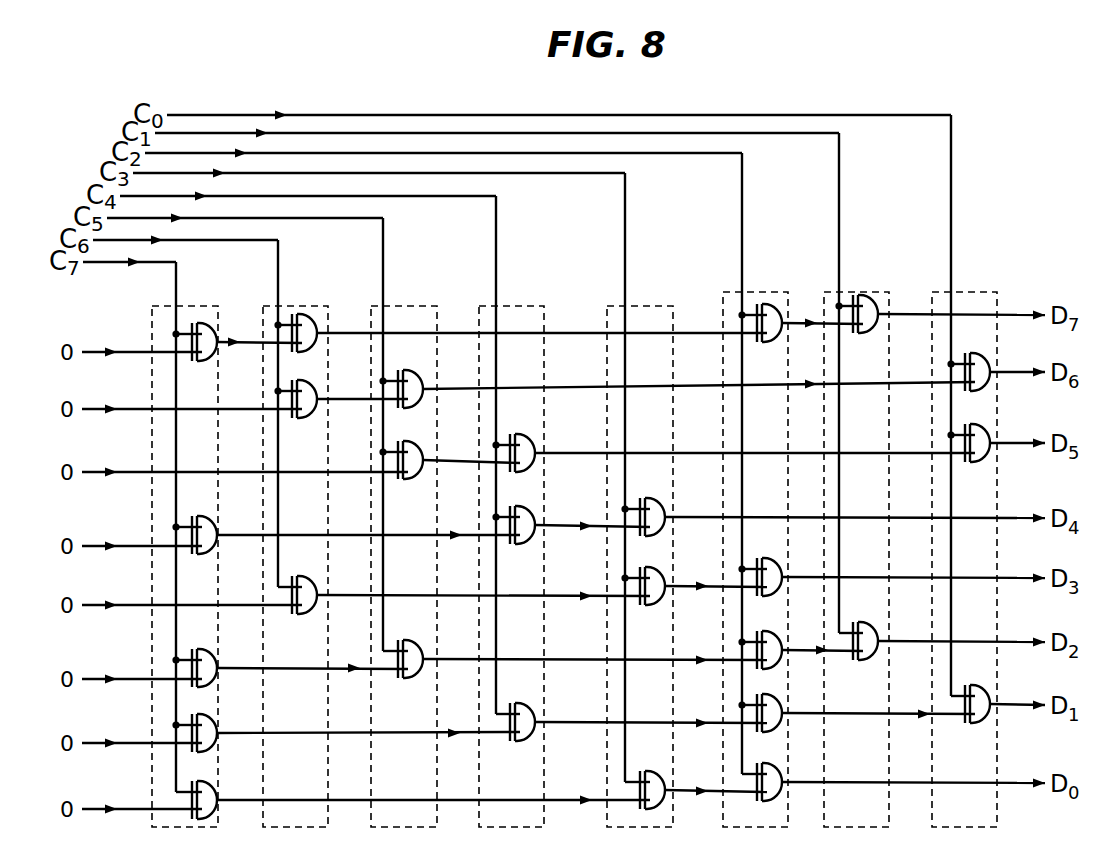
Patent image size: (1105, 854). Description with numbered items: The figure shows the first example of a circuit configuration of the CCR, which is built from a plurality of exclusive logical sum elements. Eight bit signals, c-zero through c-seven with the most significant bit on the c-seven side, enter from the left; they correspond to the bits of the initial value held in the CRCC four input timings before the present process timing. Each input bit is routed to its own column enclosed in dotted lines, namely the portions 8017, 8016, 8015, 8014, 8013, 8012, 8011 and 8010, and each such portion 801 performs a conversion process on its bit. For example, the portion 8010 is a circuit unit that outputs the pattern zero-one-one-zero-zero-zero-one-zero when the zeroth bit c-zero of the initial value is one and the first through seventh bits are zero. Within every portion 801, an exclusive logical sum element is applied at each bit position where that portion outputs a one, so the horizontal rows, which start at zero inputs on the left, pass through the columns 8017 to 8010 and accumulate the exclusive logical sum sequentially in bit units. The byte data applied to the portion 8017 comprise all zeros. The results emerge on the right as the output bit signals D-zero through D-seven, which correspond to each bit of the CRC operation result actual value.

The portion enclosed in dotted lines 801 is at (591, 471).
The circuit unit for bit c7 8017 is at (188, 306).
The circuit unit for bit c6 8016 is at (302, 306).
The circuit unit for bit c5 8015 is at (410, 306).
The circuit unit for bit c4 8014 is at (523, 306).
The circuit unit for bit c3 8013 is at (638, 306).
The circuit unit for bit c2 8012 is at (760, 292).
The circuit unit for bit c1 8011 is at (855, 292).
The circuit unit for bit c0 8010 is at (968, 292).